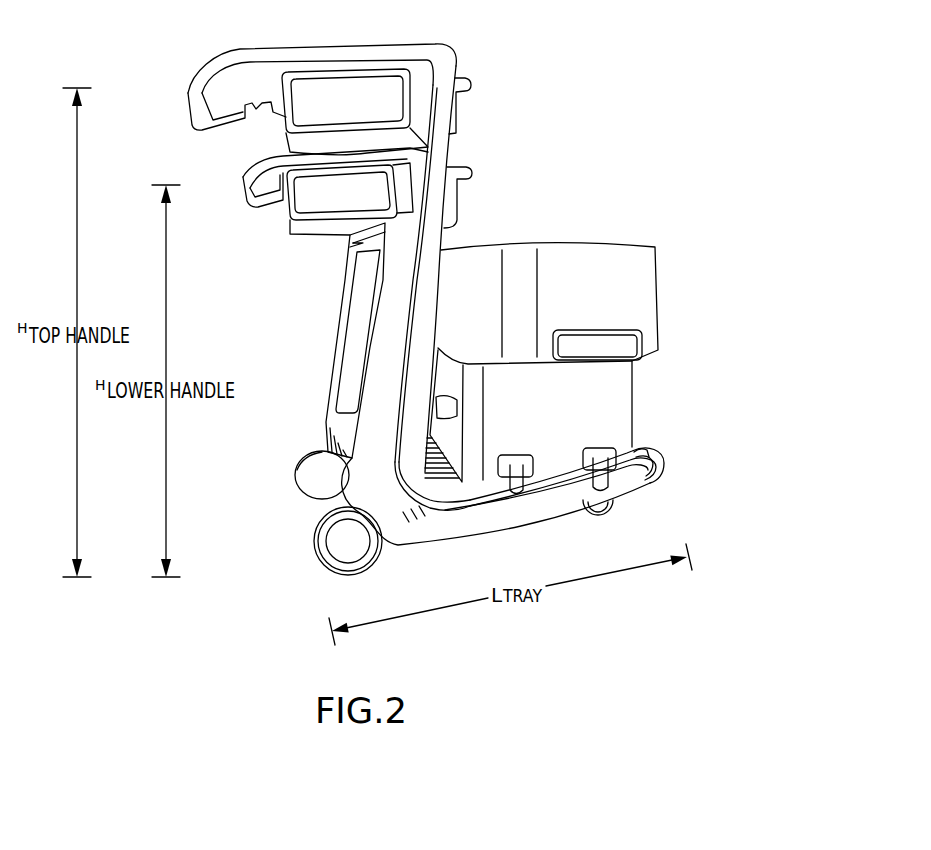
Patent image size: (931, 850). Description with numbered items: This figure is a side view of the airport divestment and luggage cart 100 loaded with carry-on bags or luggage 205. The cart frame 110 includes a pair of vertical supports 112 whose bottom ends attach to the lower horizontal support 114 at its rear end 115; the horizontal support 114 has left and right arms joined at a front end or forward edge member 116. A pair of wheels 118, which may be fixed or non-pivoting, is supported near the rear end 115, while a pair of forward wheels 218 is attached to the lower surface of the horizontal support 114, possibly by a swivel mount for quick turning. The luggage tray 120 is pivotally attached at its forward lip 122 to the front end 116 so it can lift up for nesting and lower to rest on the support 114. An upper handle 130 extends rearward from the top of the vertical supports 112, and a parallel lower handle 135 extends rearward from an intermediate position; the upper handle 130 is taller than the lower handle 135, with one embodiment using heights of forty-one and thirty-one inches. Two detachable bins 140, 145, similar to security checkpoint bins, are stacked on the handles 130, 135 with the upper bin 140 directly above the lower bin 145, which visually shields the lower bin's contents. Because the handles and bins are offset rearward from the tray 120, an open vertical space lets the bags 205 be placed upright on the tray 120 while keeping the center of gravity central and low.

The airport divestment and luggage cart 100 is at (561, 50).
The cart frame 110 is at (322, 294).
The vertical supports 112 is at (366, 338).
The lower horizontal support 114 is at (532, 523).
The rear end of the horizontal support 115 is at (431, 530).
The front end or forward edge member 116 is at (663, 460).
The wheels 118 is at (323, 569).
The luggage tray 120 is at (304, 486).
The forward end or lip of the tray 122 is at (646, 446).
The upper handle 130 is at (172, 136).
The lower handle 135 is at (225, 202).
The upper bin 140 is at (257, 144).
The lower bin 145 is at (267, 239).
The carry-on bags or luggage 205 is at (633, 380).
The forward wheels 218 is at (603, 515).